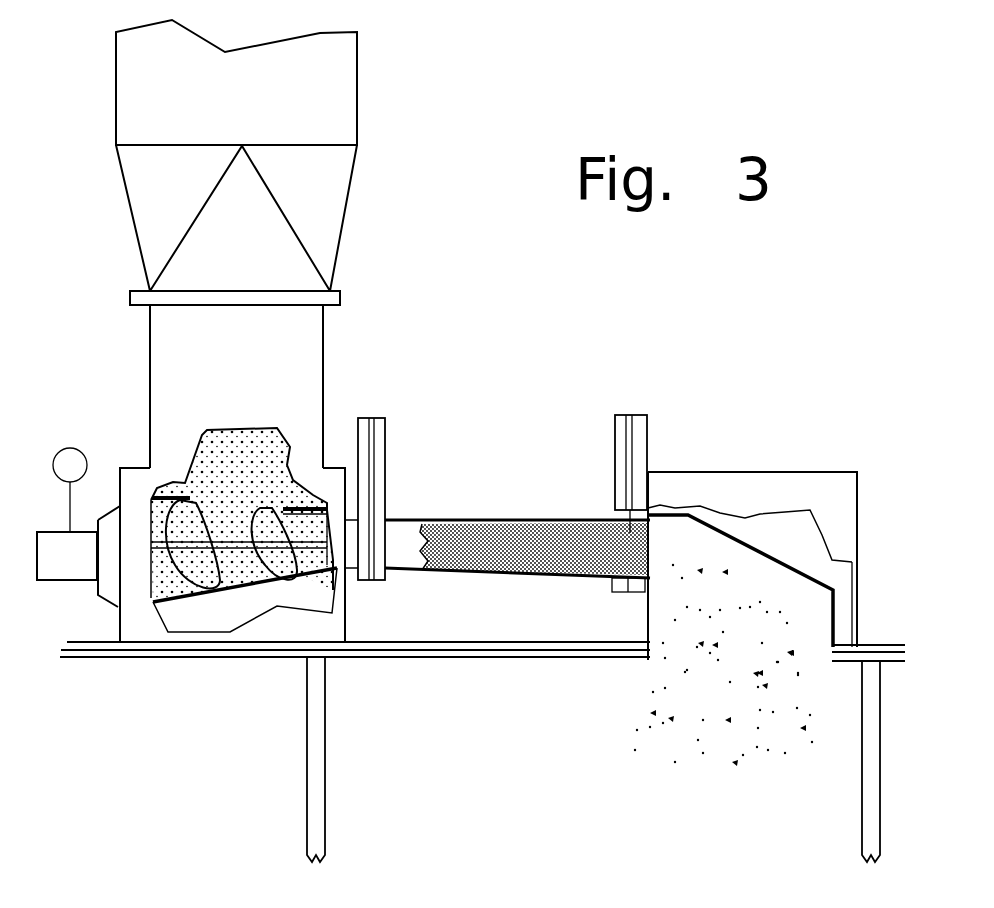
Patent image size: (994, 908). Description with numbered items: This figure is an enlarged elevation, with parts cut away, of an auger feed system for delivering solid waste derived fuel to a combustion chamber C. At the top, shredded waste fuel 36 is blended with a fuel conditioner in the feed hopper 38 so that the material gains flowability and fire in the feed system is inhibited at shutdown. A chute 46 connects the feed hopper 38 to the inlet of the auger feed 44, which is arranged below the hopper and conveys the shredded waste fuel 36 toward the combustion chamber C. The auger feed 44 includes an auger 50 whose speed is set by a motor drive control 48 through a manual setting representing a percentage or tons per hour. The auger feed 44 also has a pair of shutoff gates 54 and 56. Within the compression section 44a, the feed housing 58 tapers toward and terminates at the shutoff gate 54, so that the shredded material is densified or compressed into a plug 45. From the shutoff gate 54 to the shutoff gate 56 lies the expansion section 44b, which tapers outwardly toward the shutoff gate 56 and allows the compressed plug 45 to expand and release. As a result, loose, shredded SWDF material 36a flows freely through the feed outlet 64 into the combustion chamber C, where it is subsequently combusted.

The feed hopper 38 is at (360, 127).
The chute 46 is at (325, 345).
The motor drive control 48 is at (70, 490).
The auger feed 44 is at (95, 608).
The shredded waste fuel 36 is at (263, 452).
The auger 50 is at (275, 552).
The plug 45 is at (176, 558).
The feed housing 58 is at (190, 597).
The compression section 44a is at (265, 592).
The shutoff gate 54 is at (387, 440).
The expansion section 44b is at (472, 517).
The loose shredded SWDF material 36a is at (555, 532).
The shutoff gate 56 is at (614, 432).
The feed outlet 64 is at (705, 580).
The combustion chamber C is at (300, 762).